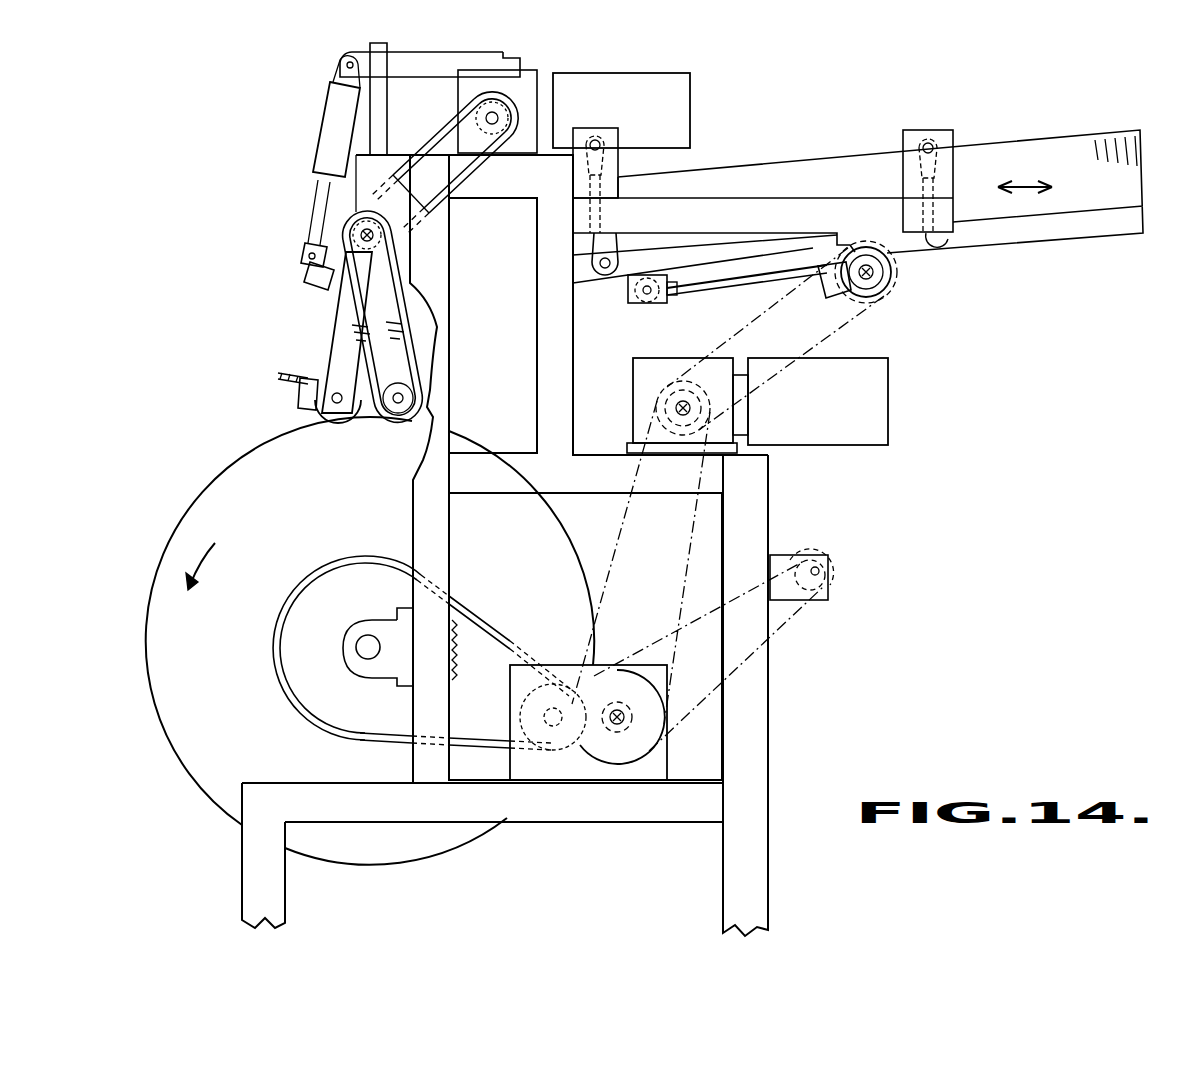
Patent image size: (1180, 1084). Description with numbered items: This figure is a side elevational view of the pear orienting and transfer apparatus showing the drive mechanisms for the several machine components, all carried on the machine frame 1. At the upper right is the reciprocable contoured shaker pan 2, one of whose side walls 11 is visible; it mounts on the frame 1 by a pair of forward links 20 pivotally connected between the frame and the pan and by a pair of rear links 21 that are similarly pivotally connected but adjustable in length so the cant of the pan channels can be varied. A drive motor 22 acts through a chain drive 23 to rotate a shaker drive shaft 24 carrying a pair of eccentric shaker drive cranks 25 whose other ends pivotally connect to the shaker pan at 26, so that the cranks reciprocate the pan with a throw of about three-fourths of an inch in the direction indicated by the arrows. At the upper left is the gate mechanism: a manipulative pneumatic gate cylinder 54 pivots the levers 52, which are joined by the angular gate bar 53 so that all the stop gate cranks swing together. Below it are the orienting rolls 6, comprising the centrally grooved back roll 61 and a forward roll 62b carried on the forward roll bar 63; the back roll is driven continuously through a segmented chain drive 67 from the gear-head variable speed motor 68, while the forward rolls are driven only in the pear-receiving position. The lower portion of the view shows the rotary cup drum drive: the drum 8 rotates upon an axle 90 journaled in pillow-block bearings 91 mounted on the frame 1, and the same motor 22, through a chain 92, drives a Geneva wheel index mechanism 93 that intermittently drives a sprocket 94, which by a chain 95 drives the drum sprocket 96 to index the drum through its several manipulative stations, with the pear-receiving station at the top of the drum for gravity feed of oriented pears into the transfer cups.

The frame 1 is at (765, 532).
The shaker pan 2 is at (1037, 132).
The orienting rolls 6 is at (370, 426).
The drum 8 is at (147, 674).
The side walls 11 is at (1110, 196).
The forward links 20 is at (605, 212).
The rear links 21 is at (922, 208).
The drive motor 22 is at (888, 430).
The chain drive 23 is at (846, 318).
The shaker drive shaft 24 is at (872, 275).
The shaker drive cranks 25 is at (742, 285).
The pivotal connection to shaker pan 26 is at (648, 296).
The levers 52 is at (332, 288).
The angular gate bar 53 is at (318, 273).
The pneumatic gate cylinder 54 is at (326, 116).
The back roll 61 is at (427, 392).
The forward roll 62b is at (312, 413).
The forward roll bar 63 is at (287, 373).
The chain drive 67 is at (436, 140).
The variable speed motor 68 is at (690, 73).
The axle 90 is at (366, 650).
The pillow-block bearings 91 is at (389, 620).
The chain 92 is at (712, 483).
The Geneva wheel index mechanism 93 is at (596, 742).
The sprocket 94 is at (553, 726).
The chain 95 is at (468, 750).
The drum sprocket 96 is at (330, 646).